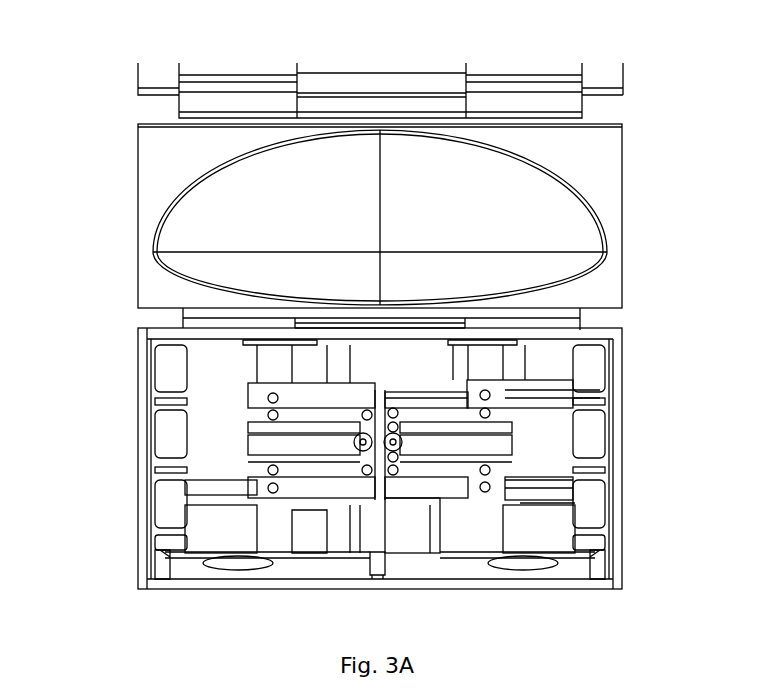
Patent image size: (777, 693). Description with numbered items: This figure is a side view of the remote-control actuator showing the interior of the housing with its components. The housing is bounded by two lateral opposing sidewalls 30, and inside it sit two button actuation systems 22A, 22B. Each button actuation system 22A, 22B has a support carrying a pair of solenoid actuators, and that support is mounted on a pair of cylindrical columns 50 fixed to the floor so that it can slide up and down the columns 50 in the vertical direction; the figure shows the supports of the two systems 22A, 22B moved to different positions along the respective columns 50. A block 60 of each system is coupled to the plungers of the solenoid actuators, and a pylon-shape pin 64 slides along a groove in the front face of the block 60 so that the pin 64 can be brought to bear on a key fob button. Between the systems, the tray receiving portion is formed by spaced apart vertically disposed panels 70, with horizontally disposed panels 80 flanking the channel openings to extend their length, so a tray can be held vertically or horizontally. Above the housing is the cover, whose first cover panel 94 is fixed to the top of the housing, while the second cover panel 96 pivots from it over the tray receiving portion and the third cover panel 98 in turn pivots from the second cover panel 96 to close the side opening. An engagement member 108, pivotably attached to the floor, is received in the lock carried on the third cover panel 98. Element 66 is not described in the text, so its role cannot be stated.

The third cover panel 98 is at (623, 72).
The second cover panel 96 is at (622, 193).
The first cover panel 94 is at (622, 328).
The lateral sidewall 30 is at (140, 401).
The button actuation system 22A is at (218, 481).
The button actuation system 22B is at (540, 495).
The panel 70 is at (163, 513).
The horizontally disposed panel 80 is at (165, 547).
The carriage 66 is at (297, 445).
The engagement member 108 is at (380, 570).
The pylon-shape pin 64 is at (400, 438).
The block 60 is at (543, 465).
The cylindrical column 50 is at (500, 530).